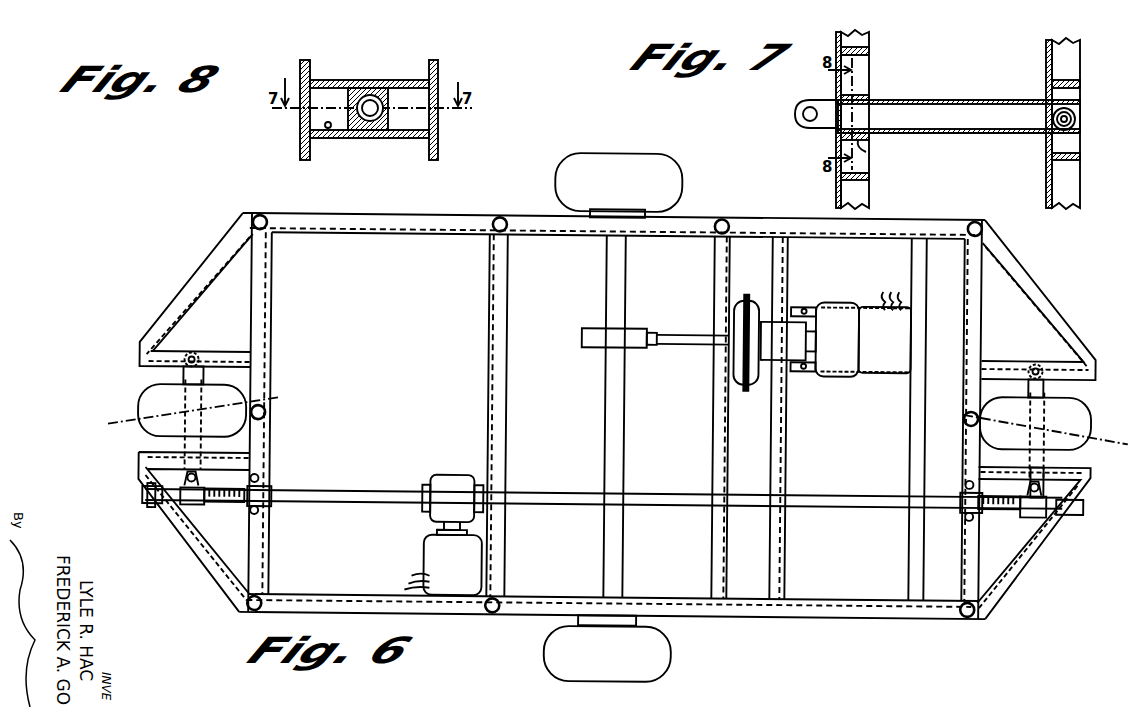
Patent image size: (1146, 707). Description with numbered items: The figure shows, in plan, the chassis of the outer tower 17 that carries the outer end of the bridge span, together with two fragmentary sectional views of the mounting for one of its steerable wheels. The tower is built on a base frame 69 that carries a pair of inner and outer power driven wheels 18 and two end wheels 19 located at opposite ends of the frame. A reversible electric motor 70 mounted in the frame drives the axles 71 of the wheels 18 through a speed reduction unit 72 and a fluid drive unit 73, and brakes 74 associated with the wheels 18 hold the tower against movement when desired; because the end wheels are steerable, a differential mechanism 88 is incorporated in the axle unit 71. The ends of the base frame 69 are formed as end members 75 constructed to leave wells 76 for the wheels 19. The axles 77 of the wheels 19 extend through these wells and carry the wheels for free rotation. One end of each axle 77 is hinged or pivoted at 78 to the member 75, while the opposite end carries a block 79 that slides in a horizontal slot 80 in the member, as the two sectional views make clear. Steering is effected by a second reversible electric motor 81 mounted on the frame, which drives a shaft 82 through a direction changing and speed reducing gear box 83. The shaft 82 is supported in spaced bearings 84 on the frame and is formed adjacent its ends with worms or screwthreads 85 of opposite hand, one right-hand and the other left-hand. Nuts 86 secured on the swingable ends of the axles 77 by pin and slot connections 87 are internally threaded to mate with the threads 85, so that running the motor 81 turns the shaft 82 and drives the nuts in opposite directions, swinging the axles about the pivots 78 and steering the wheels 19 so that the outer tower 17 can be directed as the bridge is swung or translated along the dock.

In FIG. 6, the outer tower 17 is at (890, 628).
In FIG. 6, the power driven wheels 18 is at (615, 150).
In FIG. 6, the steerable wheels 19 is at (155, 412).
In FIG. 6, the base frame 69 is at (447, 230).
In FIG. 6, the reversible electric motor 70 is at (880, 372).
In FIG. 6, the axles 71 is at (627, 254).
In FIG. 6, the speed reduction unit 72 is at (788, 341).
In FIG. 6, the fluid drive unit 73 is at (755, 298).
In FIG. 6, the brakes 74 is at (592, 210).
In FIG. 8, the end members 75 is at (420, 138).
In FIG. 7, the end members 75 is at (838, 190).
In FIG. 6, the end members 75 is at (155, 336).
In FIG. 6, the wells 76 is at (141, 448).
In FIG. 8, the axles 77 is at (390, 92).
In FIG. 7, the axles 77 is at (1022, 82).
In FIG. 6, the axles 77 is at (198, 366).
In FIG. 7, the pivot 78 is at (1076, 119).
In FIG. 6, the pivot 78 is at (193, 355).
In FIG. 8, the blocks 79 is at (370, 140).
In FIG. 7, the blocks 79 is at (868, 145).
In FIG. 8, the horizontal slots 80 is at (330, 138).
In FIG. 7, the horizontal slots 80 is at (865, 84).
In FIG. 6, the horizontal slots 80 is at (1022, 480).
In FIG. 6, the reversible electric motor 81 is at (430, 562).
In FIG. 6, the shaft 82 is at (380, 488).
In FIG. 6, the gear box 83 is at (455, 480).
In FIG. 6, the bearings 84 is at (270, 508).
In FIG. 6, the screwthreads 85 is at (232, 503).
In FIG. 6, the nuts 86 is at (195, 500).
In FIG. 6, the pin and slot connections 87 is at (200, 480).
In FIG. 6, the differential mechanism 88 is at (590, 335).